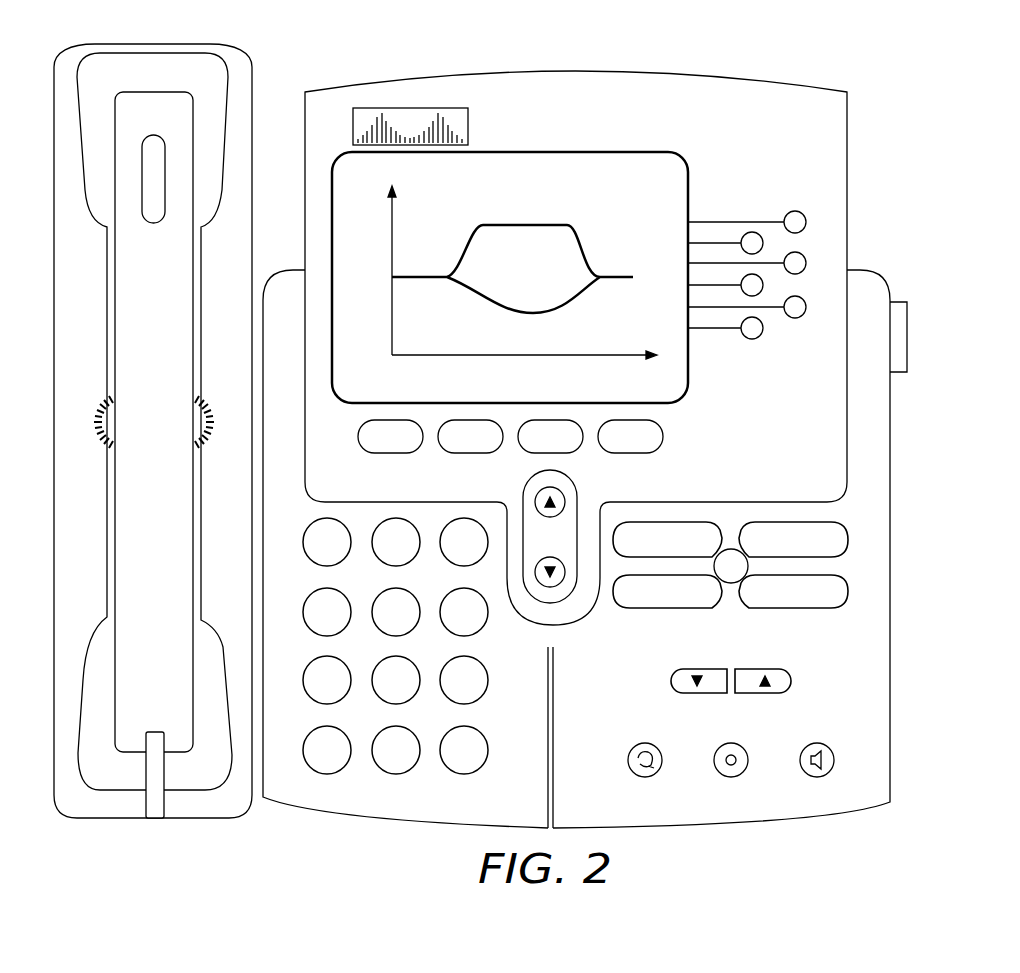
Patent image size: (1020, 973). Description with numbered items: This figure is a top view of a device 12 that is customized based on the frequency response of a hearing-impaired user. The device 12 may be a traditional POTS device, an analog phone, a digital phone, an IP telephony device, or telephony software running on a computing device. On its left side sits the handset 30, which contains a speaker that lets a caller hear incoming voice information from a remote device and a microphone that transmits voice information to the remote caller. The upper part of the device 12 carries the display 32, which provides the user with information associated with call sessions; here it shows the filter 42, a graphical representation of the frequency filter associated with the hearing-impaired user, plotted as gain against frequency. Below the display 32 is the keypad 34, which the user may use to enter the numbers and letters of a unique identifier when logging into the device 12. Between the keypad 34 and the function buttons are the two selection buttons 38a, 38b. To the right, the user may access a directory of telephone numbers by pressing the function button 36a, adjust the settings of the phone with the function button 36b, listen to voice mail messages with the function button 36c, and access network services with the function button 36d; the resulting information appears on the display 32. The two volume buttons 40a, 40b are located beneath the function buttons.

The device 12 is at (820, 53).
The handset 30 is at (154, 64).
The display 32 is at (374, 390).
The keypad 34 is at (416, 769).
The function button 36a is at (795, 522).
The function button 36b is at (813, 609).
The function button 36c is at (666, 522).
The function button 36d is at (647, 609).
The selection button 38a is at (534, 498).
The selection button 38b is at (548, 587).
The volume button 40a is at (795, 681).
The volume button 40b is at (667, 680).
The filter 42 is at (618, 219).